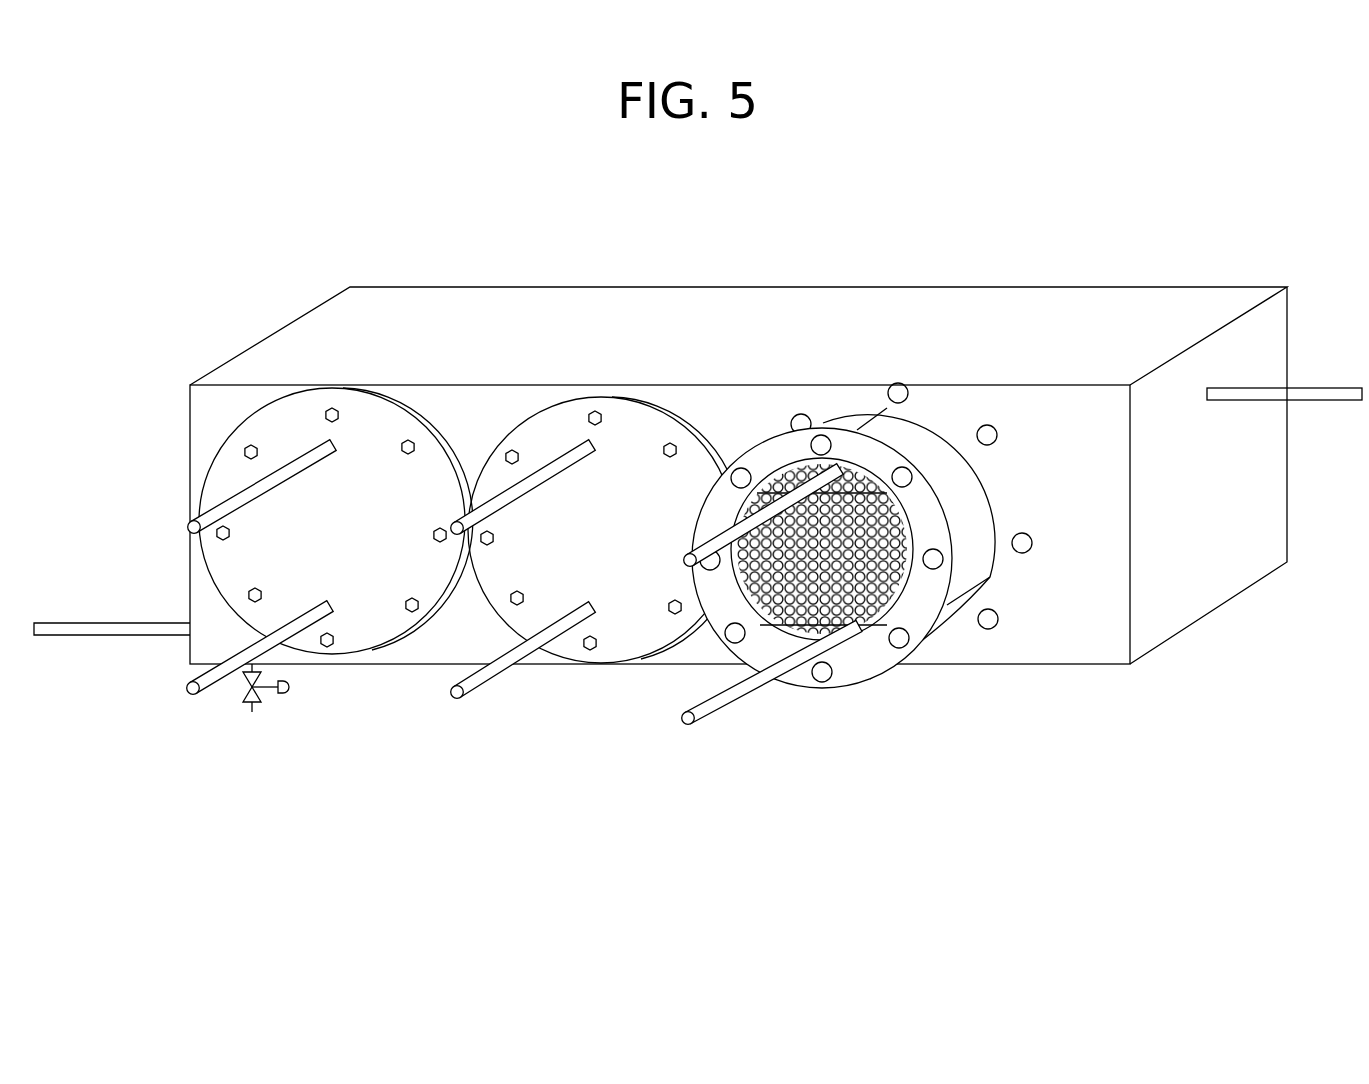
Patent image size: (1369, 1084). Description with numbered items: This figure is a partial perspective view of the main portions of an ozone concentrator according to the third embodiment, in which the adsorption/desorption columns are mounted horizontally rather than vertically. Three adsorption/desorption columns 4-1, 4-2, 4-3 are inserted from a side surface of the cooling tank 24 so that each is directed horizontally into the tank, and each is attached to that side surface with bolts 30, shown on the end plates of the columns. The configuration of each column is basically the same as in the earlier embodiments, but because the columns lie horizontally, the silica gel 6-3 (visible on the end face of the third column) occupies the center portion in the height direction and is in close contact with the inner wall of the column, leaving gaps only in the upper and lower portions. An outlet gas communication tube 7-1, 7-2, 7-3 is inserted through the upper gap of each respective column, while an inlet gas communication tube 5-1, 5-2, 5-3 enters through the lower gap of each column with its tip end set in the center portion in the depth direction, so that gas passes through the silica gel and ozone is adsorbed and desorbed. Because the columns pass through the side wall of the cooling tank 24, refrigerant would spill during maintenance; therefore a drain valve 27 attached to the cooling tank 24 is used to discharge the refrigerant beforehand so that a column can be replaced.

The cooling tank 24 is at (653, 312).
The drain valve 27 is at (247, 702).
The bolt 30 is at (585, 650).
The adsorption/desorption column 4-1 is at (347, 530).
The adsorption/desorption column 4-2 is at (565, 563).
The adsorption/desorption column 4-3 is at (913, 613).
The inlet gas communication tube 5-1 is at (193, 682).
The inlet gas communication tube 5-2 is at (457, 688).
The inlet gas communication tube 5-3 is at (683, 720).
The silica gel 6-3 is at (850, 627).
The outlet gas communication tube 7-1 is at (212, 508).
The outlet gas communication tube 7-2 is at (473, 517).
The outlet gas communication tube 7-3 is at (688, 553).